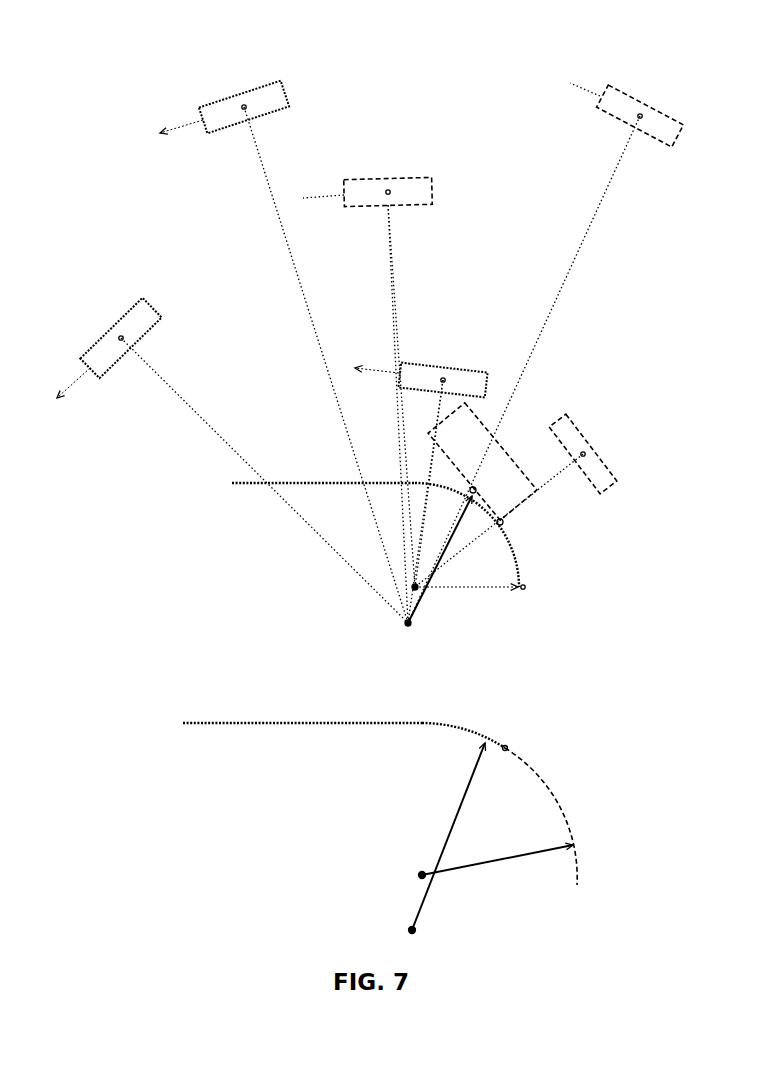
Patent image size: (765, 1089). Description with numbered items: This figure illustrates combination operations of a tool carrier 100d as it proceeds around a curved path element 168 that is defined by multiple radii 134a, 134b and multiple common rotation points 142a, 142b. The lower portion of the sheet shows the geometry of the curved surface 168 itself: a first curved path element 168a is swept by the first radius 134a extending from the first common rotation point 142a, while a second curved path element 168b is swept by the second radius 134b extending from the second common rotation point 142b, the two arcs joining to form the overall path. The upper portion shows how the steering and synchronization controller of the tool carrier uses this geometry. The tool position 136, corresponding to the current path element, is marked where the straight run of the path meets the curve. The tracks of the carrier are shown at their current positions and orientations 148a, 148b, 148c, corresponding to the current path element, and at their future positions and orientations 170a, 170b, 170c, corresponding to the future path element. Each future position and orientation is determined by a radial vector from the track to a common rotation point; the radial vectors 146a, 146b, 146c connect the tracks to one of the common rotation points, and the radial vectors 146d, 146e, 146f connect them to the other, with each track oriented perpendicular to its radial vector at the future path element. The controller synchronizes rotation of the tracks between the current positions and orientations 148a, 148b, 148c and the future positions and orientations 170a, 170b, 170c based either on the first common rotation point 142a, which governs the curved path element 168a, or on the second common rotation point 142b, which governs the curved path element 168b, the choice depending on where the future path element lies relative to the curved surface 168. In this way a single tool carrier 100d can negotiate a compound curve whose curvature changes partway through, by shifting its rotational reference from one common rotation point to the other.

The tool carrier 100d is at (120, 63).
The future track position/orientation 170a is at (147, 336).
The future track position/orientation 170b is at (257, 89).
The future track position/orientation 170c is at (452, 362).
The current track position/orientation 148a is at (417, 177).
The current track position/orientation 148b is at (608, 127).
The current track position/orientation 148c is at (583, 425).
The radial vector 146a is at (393, 273).
The radial vector 146b is at (578, 247).
The radial vector 146c is at (563, 484).
The radial vector 146d is at (207, 425).
The radial vector 146e is at (259, 158).
The radial vector 146f is at (438, 419).
The tool position 136 is at (477, 489).
The first common rotation point 142a is at (418, 592).
The second common rotation point 142b is at (412, 628).
The curved path element 168 is at (670, 722).
The curved path element 168a is at (563, 797).
The curved path element 168b is at (452, 725).
The radius 134a is at (478, 868).
The radius 134b is at (465, 818).